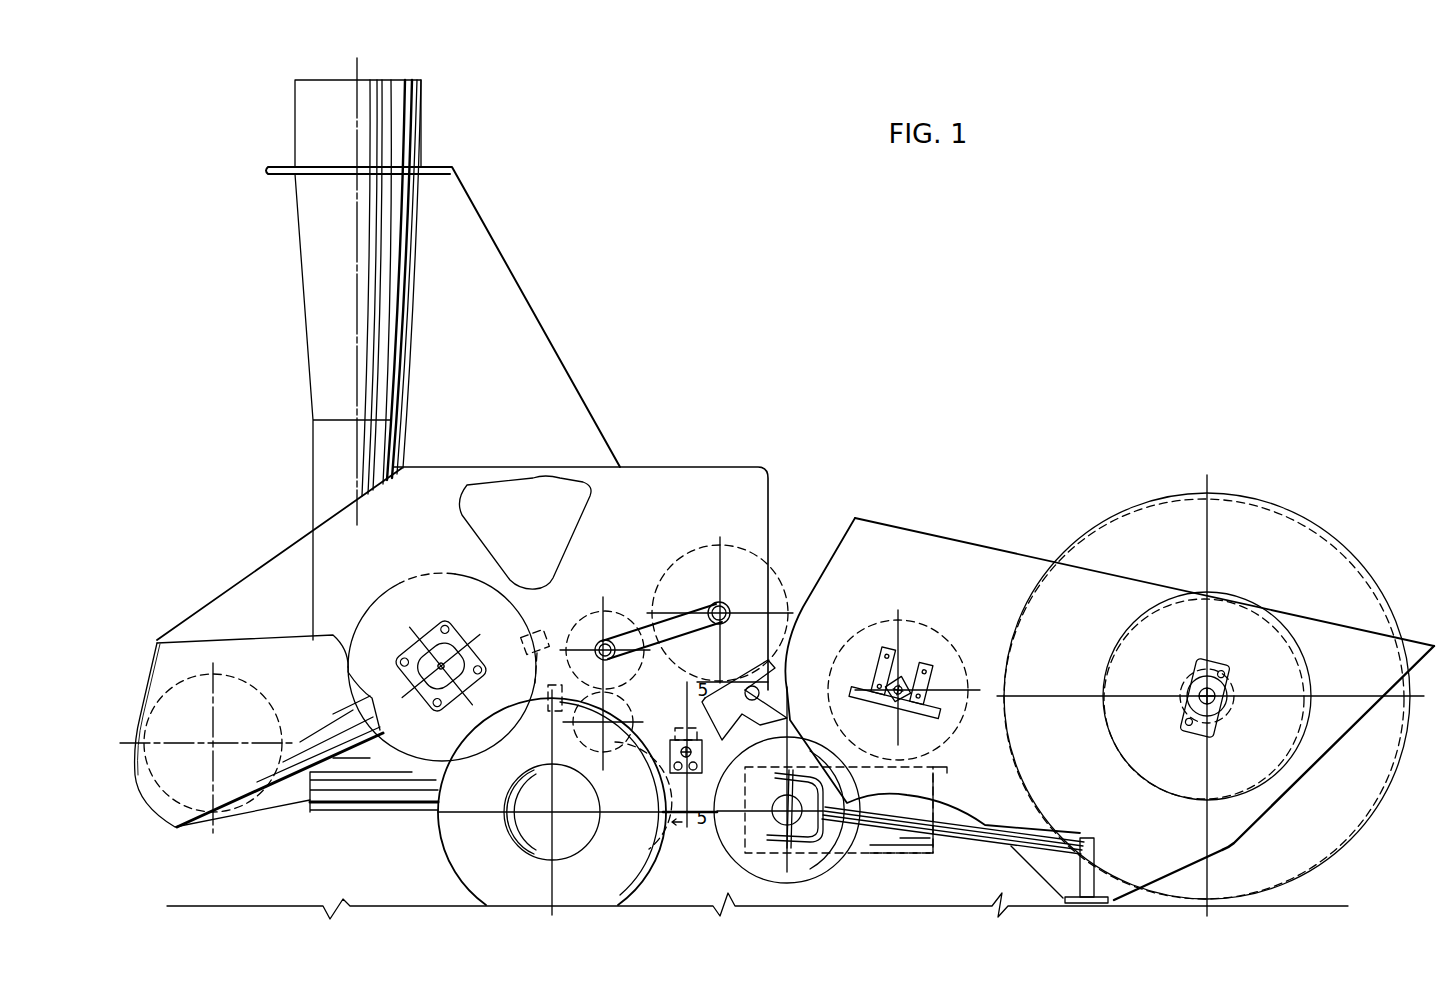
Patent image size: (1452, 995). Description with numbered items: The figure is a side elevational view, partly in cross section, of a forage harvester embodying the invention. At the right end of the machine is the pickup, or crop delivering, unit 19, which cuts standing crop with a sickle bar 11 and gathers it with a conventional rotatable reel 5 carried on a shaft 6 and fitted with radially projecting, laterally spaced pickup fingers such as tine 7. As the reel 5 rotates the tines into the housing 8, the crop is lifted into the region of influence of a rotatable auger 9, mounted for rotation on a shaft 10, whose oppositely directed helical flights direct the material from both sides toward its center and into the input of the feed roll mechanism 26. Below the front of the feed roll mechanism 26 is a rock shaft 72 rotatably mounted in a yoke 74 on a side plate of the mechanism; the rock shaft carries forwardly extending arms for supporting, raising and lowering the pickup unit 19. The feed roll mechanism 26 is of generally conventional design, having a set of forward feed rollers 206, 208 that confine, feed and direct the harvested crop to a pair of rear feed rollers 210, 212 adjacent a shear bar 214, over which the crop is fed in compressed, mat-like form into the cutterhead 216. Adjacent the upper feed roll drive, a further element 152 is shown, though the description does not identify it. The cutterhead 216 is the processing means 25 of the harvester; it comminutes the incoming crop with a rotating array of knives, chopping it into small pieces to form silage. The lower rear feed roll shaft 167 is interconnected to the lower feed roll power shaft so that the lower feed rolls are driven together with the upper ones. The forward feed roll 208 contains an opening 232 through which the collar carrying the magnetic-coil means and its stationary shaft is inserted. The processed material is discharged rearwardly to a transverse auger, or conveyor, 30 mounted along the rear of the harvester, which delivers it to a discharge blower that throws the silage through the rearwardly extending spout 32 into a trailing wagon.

The spout 32 is at (305, 232).
The feed roll mechanism 26 is at (686, 498).
The processing means 25 is at (353, 581).
The transverse auger 30 is at (278, 707).
The cutterhead 216 is at (445, 570).
The shear bar 214 is at (548, 712).
The lower rear feed roll shaft 167 is at (577, 802).
The rear feed roller 212 is at (603, 693).
The forward feed roller 208 is at (661, 795).
The rear feed roller 210 is at (580, 613).
The forward feed roller 206 is at (773, 573).
The pulley 152 is at (727, 617).
The opening 232 is at (676, 692).
The yoke 74 is at (717, 687).
The rock shaft 72 is at (855, 690).
The housing 8 is at (997, 547).
The pickup unit 19 is at (1062, 494).
The auger 9 is at (962, 650).
The shaft 10 is at (907, 673).
The reel 5 is at (1382, 594).
The shaft 6 is at (1219, 692).
The tine 7 is at (1302, 780).
The sickle bar 11 is at (1087, 905).